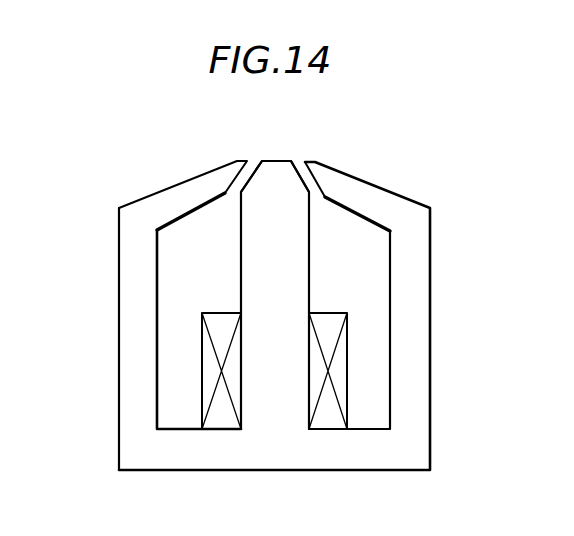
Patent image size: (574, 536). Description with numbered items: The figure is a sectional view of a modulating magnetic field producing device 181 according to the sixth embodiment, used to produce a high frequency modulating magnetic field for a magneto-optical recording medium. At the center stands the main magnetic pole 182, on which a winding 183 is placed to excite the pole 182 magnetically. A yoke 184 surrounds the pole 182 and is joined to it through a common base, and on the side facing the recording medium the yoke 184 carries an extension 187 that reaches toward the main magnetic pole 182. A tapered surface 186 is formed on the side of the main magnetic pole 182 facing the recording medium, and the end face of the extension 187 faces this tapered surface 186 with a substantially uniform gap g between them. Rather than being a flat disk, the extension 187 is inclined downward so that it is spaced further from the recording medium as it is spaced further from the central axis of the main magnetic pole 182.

The modulating magnetic field producing device 181 is at (450, 393).
The main magnetic pole 182 is at (252, 395).
The winding 183 is at (202, 333).
The yoke 184 is at (130, 368).
The tapered surface 186 is at (256, 161).
The extension 187 is at (176, 200).
The gap g is at (241, 199).